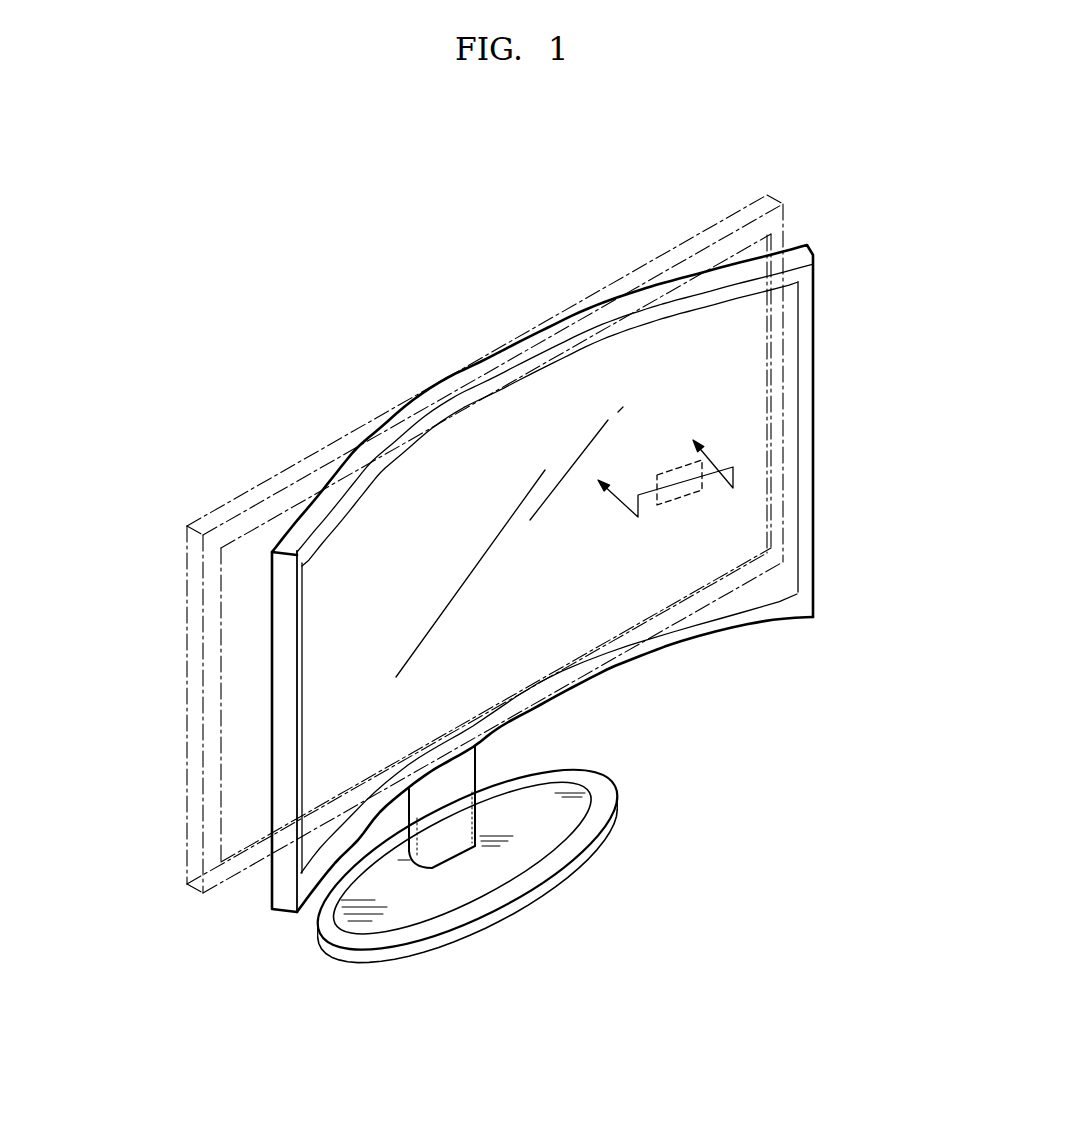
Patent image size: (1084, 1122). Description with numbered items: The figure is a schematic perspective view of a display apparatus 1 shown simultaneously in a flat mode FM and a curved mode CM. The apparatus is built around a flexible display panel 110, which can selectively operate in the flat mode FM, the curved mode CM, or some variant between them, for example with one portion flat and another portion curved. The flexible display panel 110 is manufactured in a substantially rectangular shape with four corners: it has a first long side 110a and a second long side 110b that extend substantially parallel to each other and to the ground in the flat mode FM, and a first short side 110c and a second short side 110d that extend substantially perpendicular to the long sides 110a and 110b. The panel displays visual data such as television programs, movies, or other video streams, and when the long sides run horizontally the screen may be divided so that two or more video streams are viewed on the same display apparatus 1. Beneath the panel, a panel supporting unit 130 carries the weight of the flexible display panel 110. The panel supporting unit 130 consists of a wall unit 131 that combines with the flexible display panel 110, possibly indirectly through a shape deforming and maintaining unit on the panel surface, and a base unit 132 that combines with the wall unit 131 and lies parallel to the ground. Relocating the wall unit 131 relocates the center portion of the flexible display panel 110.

The display apparatus 1 is at (818, 194).
The flexible display panel 110 is at (246, 479).
The first long side 110a is at (315, 457).
The second long side 110b is at (238, 873).
The first short side 110c is at (188, 718).
The second short side 110d is at (783, 370).
The flat mode FM is at (713, 233).
The curved mode CM is at (738, 453).
The panel supporting unit 130 is at (478, 859).
The wall unit 131 is at (452, 838).
The base unit 132 is at (507, 907).